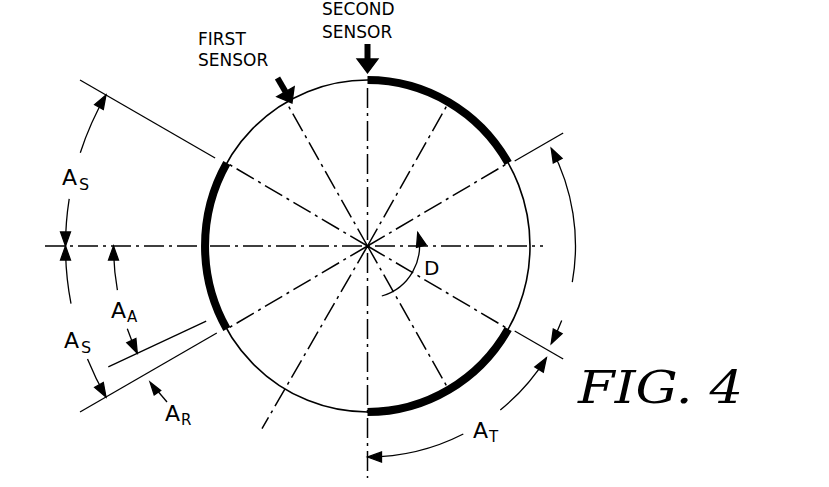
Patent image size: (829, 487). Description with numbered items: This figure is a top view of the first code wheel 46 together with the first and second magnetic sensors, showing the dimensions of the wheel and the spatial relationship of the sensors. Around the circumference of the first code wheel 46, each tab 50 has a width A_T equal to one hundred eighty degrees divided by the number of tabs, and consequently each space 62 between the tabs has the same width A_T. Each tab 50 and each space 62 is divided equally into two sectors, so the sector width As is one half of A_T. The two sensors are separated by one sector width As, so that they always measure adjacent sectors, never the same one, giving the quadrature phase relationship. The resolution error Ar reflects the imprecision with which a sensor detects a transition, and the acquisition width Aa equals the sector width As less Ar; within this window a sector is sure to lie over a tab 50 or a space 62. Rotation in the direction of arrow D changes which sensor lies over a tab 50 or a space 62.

The first code wheel 46 is at (258, 368).
The tab 50 is at (503, 152).
The space 62 is at (561, 245).